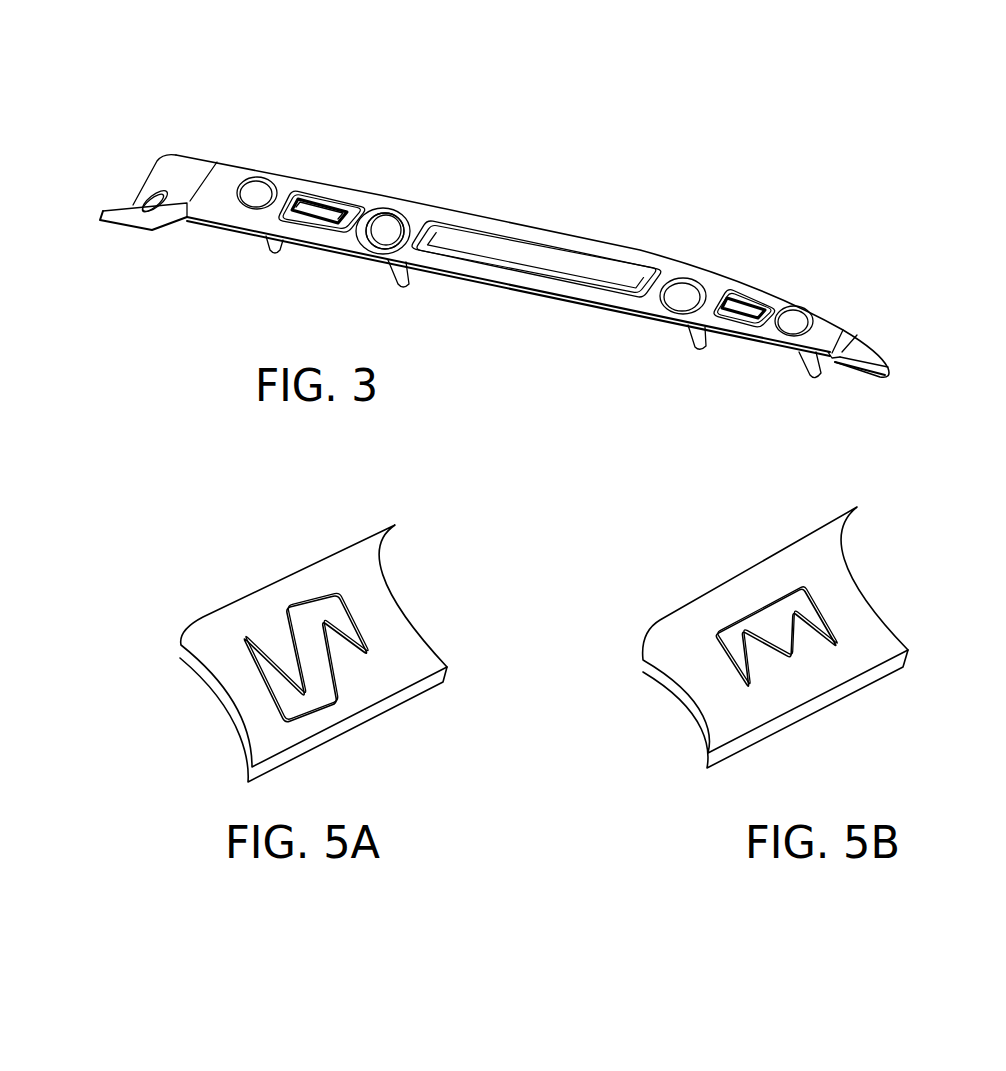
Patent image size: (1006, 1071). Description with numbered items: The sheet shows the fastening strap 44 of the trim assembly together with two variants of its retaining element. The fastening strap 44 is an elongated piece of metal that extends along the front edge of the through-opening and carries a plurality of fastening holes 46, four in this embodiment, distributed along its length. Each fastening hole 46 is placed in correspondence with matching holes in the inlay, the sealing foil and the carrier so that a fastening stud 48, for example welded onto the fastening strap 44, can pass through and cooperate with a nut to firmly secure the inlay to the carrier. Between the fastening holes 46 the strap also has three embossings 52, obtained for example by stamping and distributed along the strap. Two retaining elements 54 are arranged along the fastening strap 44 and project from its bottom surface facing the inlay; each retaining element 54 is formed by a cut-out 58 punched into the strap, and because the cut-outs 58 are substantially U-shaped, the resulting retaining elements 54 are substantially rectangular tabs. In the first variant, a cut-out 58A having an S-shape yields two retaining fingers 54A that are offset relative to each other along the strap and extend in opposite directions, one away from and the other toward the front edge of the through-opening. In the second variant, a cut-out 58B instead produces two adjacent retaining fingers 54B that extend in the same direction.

In FIG. 3, the fastening strap 44 is at (523, 183).
In FIG. 3, the fastening hole 46 is at (384, 230).
In FIG. 3, the fastening stud 48 is at (383, 235).
In FIG. 3, the embossing 52 is at (348, 207).
In FIG. 3, the retaining element 54 is at (306, 215).
In FIG. 3, the cut-out 58 is at (312, 200).
In FIG. 5A, the retaining finger 54A is at (278, 647).
In FIG. 5A, the cut-out 58A is at (304, 612).
In FIG. 5B, the retaining finger 54B is at (812, 648).
In FIG. 5B, the cut-out 58B is at (757, 614).